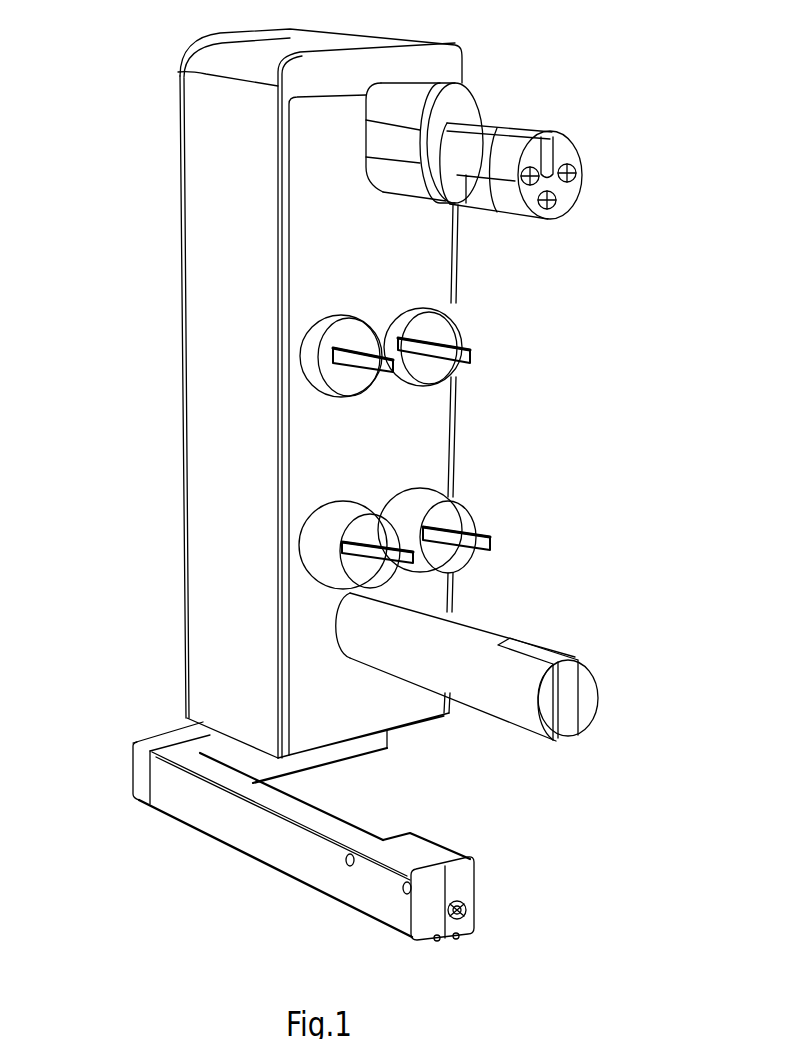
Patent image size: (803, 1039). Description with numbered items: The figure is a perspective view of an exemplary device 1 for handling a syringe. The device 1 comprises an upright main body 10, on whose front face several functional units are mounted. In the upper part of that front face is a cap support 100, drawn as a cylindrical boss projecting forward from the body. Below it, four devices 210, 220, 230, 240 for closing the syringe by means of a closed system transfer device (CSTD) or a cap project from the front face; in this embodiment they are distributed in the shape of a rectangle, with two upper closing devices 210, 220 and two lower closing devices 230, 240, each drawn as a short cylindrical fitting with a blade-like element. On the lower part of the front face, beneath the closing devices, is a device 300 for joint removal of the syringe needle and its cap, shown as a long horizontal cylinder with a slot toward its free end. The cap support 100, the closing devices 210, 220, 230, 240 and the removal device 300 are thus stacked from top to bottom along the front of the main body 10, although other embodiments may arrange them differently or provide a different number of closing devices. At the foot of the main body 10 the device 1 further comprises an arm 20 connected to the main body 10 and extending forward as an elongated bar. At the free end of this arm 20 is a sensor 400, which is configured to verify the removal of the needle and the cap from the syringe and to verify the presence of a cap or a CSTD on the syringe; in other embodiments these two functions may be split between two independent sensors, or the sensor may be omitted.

The device 1 is at (116, 102).
The main body 10 is at (237, 483).
The arm 20 is at (227, 818).
The cap support 100 is at (580, 150).
The device for closing the syringe 210 is at (343, 388).
The device for closing the syringe 220 is at (440, 330).
The device for closing the syringe 230 is at (327, 568).
The device for closing the syringe 240 is at (460, 517).
The device for joint removal of the syringe needle and its cap 300 is at (595, 690).
The sensor 400 is at (470, 897).